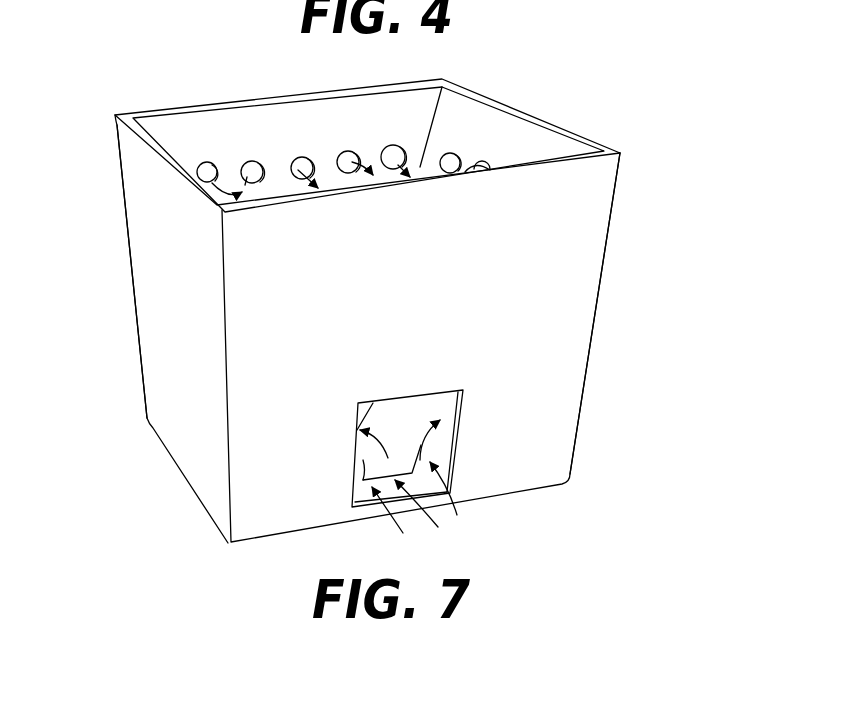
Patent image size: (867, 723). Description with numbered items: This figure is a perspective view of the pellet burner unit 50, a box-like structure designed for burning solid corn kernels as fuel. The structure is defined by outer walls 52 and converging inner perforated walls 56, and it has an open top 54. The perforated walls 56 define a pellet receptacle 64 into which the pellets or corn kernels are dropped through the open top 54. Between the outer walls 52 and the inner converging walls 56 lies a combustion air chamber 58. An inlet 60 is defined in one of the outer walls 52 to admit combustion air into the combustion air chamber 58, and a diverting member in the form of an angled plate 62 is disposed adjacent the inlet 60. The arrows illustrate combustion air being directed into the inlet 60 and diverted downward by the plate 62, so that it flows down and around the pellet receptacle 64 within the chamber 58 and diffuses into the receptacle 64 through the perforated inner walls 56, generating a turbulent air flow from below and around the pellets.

The pellet burner unit 50 is at (643, 72).
The outer walls 52 is at (585, 302).
The open top 54 is at (547, 143).
The inner perforated walls 56 is at (182, 132).
The combustion air chamber 58 is at (213, 202).
The inlet 60 is at (443, 455).
The angled plate 62 is at (353, 485).
The pellet receptacle 64 is at (467, 123).